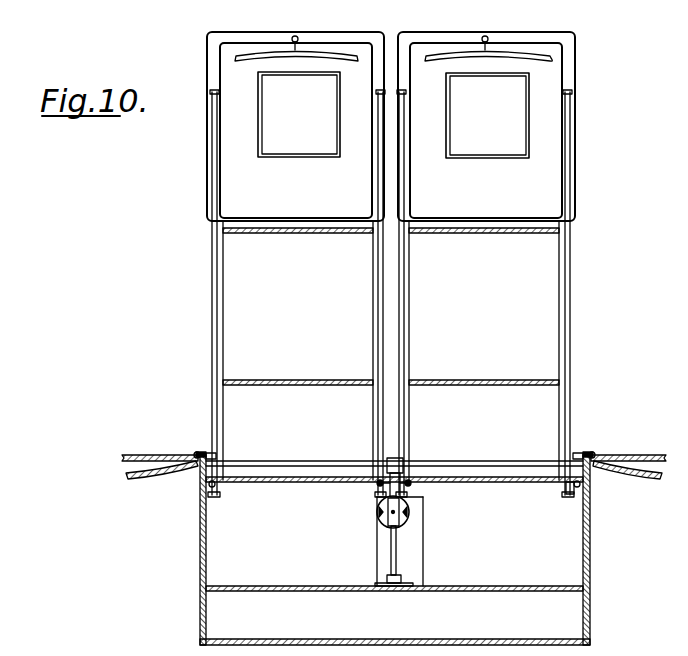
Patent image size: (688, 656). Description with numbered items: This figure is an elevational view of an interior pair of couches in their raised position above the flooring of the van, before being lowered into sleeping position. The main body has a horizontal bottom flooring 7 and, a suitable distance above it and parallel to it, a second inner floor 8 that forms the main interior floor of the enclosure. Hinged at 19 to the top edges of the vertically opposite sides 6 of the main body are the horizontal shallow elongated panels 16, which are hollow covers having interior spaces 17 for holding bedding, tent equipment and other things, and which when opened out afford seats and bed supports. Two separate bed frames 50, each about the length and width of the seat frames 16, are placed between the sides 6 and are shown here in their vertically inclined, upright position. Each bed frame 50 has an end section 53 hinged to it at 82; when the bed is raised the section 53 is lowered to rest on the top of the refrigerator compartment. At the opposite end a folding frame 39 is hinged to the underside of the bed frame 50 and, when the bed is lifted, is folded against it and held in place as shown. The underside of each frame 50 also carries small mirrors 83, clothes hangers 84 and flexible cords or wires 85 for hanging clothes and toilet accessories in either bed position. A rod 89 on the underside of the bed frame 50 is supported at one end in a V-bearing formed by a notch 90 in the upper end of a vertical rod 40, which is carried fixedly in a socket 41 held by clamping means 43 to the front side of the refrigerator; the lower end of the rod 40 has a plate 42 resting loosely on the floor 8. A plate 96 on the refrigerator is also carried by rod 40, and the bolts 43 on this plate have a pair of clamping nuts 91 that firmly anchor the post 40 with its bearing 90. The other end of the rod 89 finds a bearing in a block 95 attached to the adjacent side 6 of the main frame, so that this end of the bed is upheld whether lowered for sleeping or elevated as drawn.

The vertically opposite sides of the main body 6 is at (201, 522).
The horizontal bottom flooring 7 is at (324, 640).
The second inner floor 8 is at (296, 585).
The horizontal shallow elongated panels 16 is at (150, 454).
The interior spaces 17 is at (146, 470).
The hinge 19 is at (198, 451).
The folding frame 39 is at (209, 190).
The vertical rod 40 is at (390, 555).
The socket 41 is at (397, 524).
The plate 42 is at (413, 585).
The clamping means (bolts) 43 is at (378, 510).
The bed frames 50 is at (230, 300).
The end sections 53 is at (277, 485).
The hinge (pivot) 82 is at (571, 488).
The small mirrors 83 is at (270, 120).
The clothes hangers 84 is at (239, 62).
The flexible cords or wires 85 is at (315, 234).
The rod 89 is at (303, 460).
The notch (V-bearing) 90 is at (398, 459).
The clamping nuts 91 is at (382, 519).
The block 95 is at (213, 455).
The plate 96 is at (410, 512).